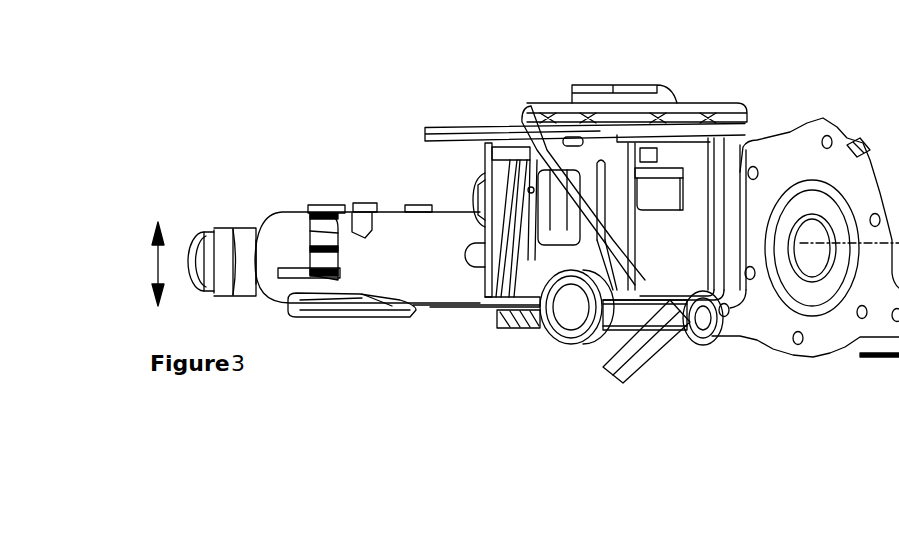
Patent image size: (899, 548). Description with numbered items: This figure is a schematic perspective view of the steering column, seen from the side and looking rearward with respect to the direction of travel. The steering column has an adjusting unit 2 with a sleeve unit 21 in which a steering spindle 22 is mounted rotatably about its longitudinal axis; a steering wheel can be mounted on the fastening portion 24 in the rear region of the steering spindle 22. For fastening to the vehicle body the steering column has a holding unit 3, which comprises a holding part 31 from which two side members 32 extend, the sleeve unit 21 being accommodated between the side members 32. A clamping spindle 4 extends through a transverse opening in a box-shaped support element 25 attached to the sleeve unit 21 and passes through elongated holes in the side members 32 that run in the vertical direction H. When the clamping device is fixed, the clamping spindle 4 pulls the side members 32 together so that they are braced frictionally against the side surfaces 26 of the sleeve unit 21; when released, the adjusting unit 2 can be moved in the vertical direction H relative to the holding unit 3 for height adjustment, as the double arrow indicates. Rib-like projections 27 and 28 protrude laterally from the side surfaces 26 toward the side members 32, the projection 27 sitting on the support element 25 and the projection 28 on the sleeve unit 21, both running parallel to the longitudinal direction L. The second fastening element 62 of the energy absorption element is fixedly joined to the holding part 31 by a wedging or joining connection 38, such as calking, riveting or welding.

The adjusting unit 2 is at (357, 212).
The holding unit 3 is at (477, 97).
The clamping spindle 4 is at (478, 195).
The sleeve unit 21 is at (397, 181).
The steering spindle 22 is at (232, 250).
The fastening portion 24 is at (203, 255).
The support element 25 is at (660, 208).
The side surfaces 26 is at (872, 40).
The rib-like projection 27 is at (457, 176).
The rib-like projection 28 is at (470, 268).
The holding part 31 is at (683, 105).
The side members 32 is at (700, 173).
The wedging or joining connection 38 is at (528, 105).
The second fastening element 62 is at (565, 108).
The vertical direction H is at (190, 266).
The longitudinal direction L is at (884, 360).